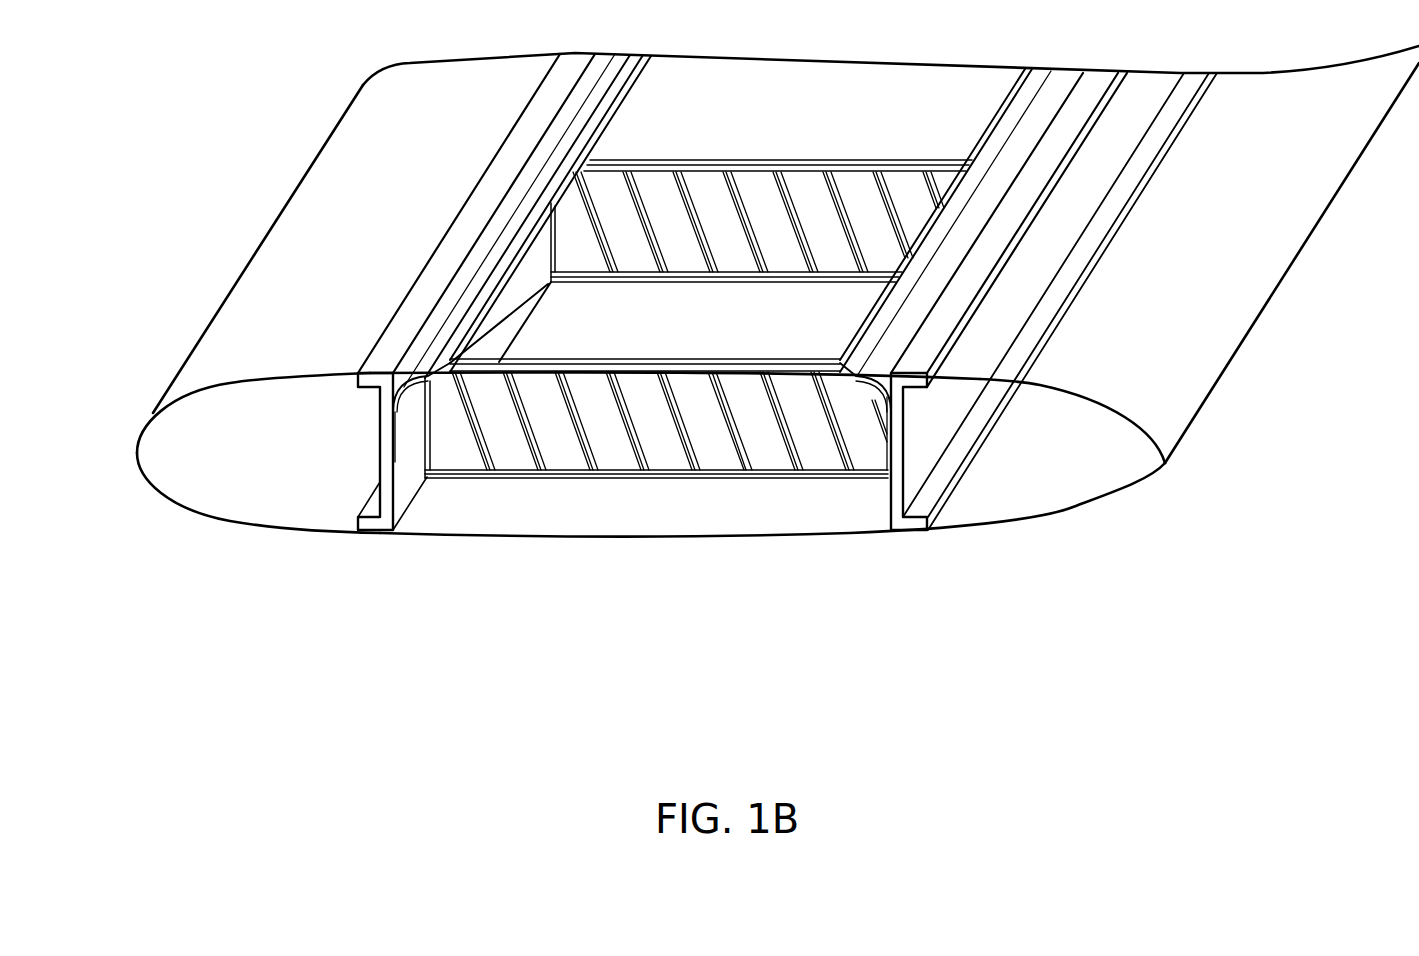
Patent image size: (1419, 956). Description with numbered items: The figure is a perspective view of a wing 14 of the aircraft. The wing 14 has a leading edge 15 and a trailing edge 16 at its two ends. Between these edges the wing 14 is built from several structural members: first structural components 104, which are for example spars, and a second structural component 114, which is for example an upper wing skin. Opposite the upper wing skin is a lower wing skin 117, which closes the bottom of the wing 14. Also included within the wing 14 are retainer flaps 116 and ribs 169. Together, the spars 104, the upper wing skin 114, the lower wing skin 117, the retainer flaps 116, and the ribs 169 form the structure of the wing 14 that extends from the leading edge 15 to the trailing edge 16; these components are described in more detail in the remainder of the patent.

The wing 14 is at (743, 356).
The leading edge 15 is at (1166, 467).
The trailing edge 16 is at (137, 453).
The first structural components 104 is at (377, 523).
The second structural component 114 is at (268, 253).
The retainer flaps 116 is at (400, 395).
The lower wing skin 117 is at (613, 540).
The ribs 169 is at (752, 188).